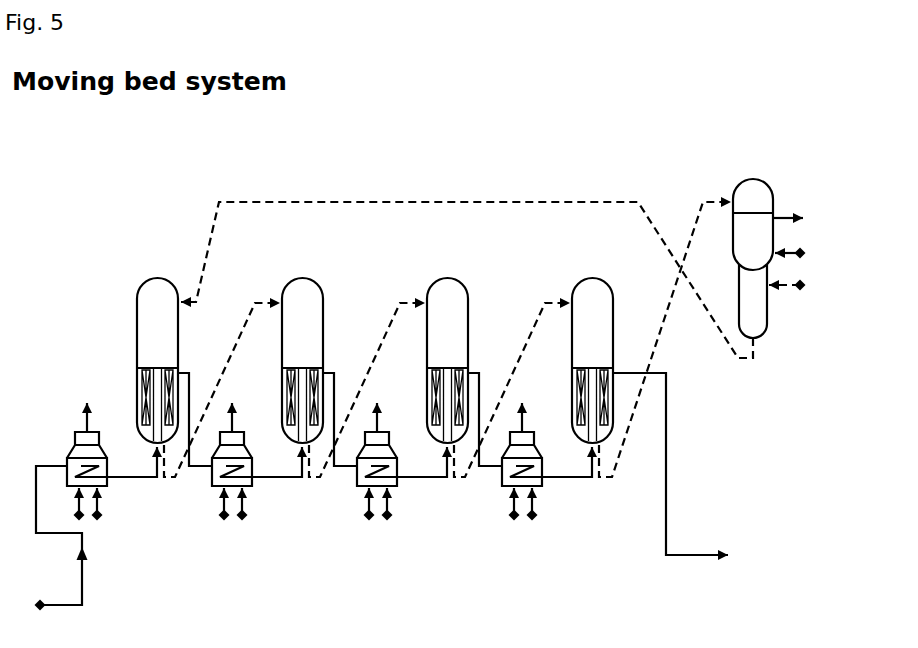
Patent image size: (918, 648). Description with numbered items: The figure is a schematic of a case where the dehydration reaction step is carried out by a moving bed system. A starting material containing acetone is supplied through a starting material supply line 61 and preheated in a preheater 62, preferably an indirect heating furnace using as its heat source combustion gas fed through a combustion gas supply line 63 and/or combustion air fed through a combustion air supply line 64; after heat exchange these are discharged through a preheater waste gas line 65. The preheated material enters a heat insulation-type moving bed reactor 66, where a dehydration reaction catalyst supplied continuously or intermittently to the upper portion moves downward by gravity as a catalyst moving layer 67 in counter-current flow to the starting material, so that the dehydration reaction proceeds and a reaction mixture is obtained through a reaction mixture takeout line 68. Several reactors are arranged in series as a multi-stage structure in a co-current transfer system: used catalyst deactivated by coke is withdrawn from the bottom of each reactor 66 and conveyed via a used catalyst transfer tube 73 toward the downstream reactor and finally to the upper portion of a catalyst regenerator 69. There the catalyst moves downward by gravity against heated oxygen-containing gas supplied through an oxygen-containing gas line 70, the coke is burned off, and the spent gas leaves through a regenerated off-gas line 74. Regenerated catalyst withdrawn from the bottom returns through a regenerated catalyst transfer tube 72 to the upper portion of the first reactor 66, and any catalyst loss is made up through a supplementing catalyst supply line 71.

The starting material supply line 61 is at (55, 601).
The preheater 62 is at (99, 447).
The combustion gas supply line 63 is at (77, 507).
The combustion air supply line 64 is at (101, 506).
The preheater waste gas line 65 is at (83, 420).
The heat insulation-type moving bed reactor 66 is at (151, 279).
The catalyst moving layer 67 is at (138, 371).
The reaction mixture takeout line 68 is at (668, 490).
The catalyst regenerator 69 is at (740, 184).
The oxygen-containing gas line 70 is at (794, 253).
The supplementing catalyst supply line 71 is at (789, 292).
The regenerated catalyst transfer tube 72 is at (452, 201).
The used catalyst transfer tube 73 is at (663, 331).
The regenerated off-gas line 74 is at (789, 218).